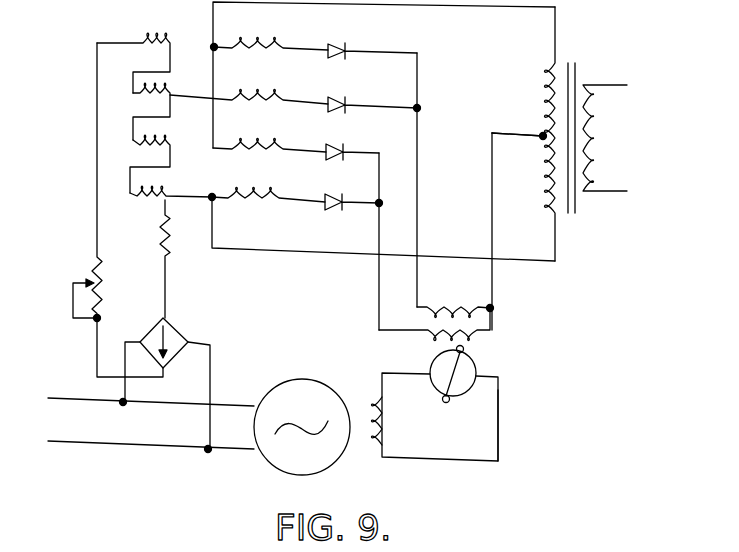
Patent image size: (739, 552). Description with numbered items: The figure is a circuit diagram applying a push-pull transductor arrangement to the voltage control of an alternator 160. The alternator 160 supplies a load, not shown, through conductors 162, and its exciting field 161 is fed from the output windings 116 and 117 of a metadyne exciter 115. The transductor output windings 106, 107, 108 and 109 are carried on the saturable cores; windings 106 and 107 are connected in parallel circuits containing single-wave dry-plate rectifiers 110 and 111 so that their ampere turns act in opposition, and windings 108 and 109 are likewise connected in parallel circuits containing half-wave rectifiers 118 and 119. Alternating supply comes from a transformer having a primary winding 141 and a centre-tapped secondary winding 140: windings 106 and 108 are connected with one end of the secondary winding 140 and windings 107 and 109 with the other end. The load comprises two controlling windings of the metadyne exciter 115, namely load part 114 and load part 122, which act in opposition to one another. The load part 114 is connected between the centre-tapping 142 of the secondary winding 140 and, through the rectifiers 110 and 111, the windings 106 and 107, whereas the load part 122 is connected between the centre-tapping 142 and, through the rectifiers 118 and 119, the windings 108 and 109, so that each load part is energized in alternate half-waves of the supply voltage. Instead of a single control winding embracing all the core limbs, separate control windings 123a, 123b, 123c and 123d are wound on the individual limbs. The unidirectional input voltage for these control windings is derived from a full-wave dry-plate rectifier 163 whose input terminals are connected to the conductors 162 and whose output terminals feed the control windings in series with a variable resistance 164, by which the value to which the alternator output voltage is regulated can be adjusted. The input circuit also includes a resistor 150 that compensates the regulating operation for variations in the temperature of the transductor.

The output winding 106 is at (265, 38).
The output winding 107 is at (263, 92).
The output winding 108 is at (263, 142).
The output winding 109 is at (265, 197).
The rectifier 110 is at (346, 50).
The rectifier 111 is at (351, 90).
The rectifier 118 is at (340, 145).
The rectifier 119 is at (340, 196).
The load part 114 is at (453, 300).
The load part 122 is at (473, 337).
The metadyne exciter 115 is at (455, 428).
The output winding 116 is at (498, 394).
The output winding 117 is at (418, 370).
The exciting field 161 is at (386, 424).
The control winding 123a is at (161, 22).
The control winding 123b is at (155, 83).
The control winding 123c is at (153, 136).
The control winding 123d is at (150, 186).
The resistor 150 is at (170, 244).
The variable resistance 164 is at (100, 276).
The full-wave dry-plate rectifier 163 is at (215, 327).
The alternator 160 is at (366, 486).
The conductors 162 is at (80, 402).
The secondary winding 140 is at (544, 84).
The primary winding 141 is at (599, 136).
The centre-tapping 142 is at (541, 133).